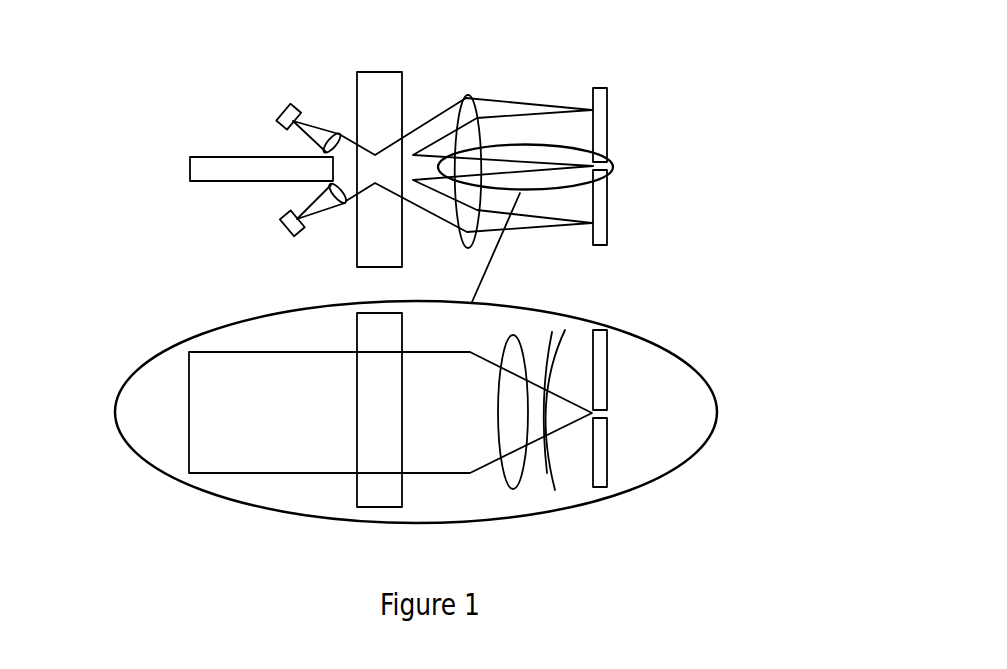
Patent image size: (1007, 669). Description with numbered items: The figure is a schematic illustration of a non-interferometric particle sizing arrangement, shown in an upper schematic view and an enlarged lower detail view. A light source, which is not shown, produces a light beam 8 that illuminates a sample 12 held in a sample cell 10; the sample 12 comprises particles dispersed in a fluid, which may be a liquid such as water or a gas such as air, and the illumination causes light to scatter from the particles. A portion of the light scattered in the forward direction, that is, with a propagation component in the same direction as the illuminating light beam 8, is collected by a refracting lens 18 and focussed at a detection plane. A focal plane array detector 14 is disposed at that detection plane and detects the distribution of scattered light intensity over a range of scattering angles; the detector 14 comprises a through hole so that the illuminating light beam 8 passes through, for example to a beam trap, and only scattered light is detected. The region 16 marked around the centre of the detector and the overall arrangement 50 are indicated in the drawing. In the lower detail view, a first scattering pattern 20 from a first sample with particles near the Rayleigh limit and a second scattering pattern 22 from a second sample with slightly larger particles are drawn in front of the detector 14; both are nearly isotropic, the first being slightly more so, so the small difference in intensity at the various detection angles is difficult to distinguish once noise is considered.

The light beam 8 is at (232, 163).
The sample cell 10 is at (357, 98).
The sample 12 is at (378, 97).
The focal plane array detector 14 is at (607, 122).
The aperture region 16 is at (613, 168).
The refracting lens 18 is at (468, 96).
The first scattering pattern 20 is at (543, 477).
The second scattering pattern 22 is at (557, 481).
The optical system 50 is at (530, 77).